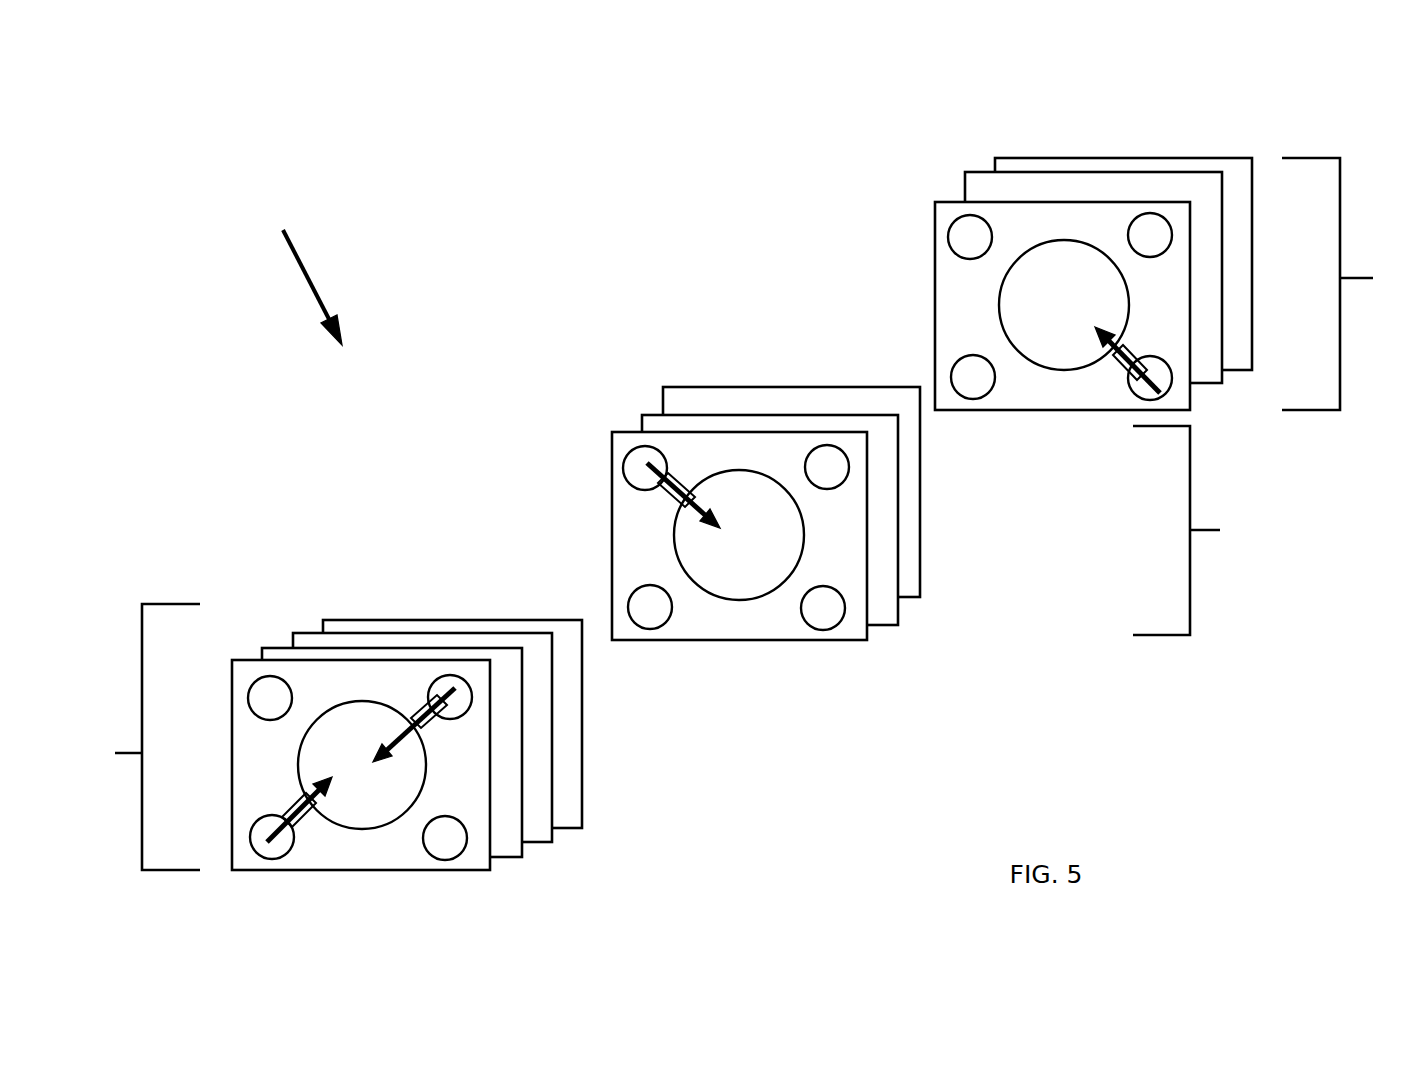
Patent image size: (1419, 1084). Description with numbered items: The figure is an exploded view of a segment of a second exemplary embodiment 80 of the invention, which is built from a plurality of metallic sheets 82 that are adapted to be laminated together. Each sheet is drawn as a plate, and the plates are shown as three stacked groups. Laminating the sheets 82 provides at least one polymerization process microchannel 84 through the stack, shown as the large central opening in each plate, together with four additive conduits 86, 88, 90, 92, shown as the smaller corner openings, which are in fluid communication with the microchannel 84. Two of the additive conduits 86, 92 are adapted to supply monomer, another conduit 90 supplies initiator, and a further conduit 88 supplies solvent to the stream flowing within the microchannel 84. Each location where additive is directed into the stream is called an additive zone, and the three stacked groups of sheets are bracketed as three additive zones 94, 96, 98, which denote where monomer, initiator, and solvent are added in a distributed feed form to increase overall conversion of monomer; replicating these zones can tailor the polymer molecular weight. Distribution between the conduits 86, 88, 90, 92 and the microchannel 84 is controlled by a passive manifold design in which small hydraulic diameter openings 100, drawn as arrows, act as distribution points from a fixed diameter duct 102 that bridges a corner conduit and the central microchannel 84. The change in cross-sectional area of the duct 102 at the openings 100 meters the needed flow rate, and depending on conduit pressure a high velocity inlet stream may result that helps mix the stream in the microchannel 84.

The second exemplary embodiment 80 is at (299, 272).
The metallic sheets 82 is at (568, 810).
The polymerization process microchannel 84 is at (315, 762).
The additive conduit 86 is at (263, 855).
The additive conduit 88 is at (445, 843).
The additive conduit 90 is at (262, 693).
The additive conduit 92 is at (452, 692).
The additive zone 94 is at (138, 737).
The additive zone 96 is at (1196, 530).
The additive zone 98 is at (1344, 284).
The small hydraulic diameter openings 100 is at (395, 720).
The fixed diameter duct 102 is at (420, 733).